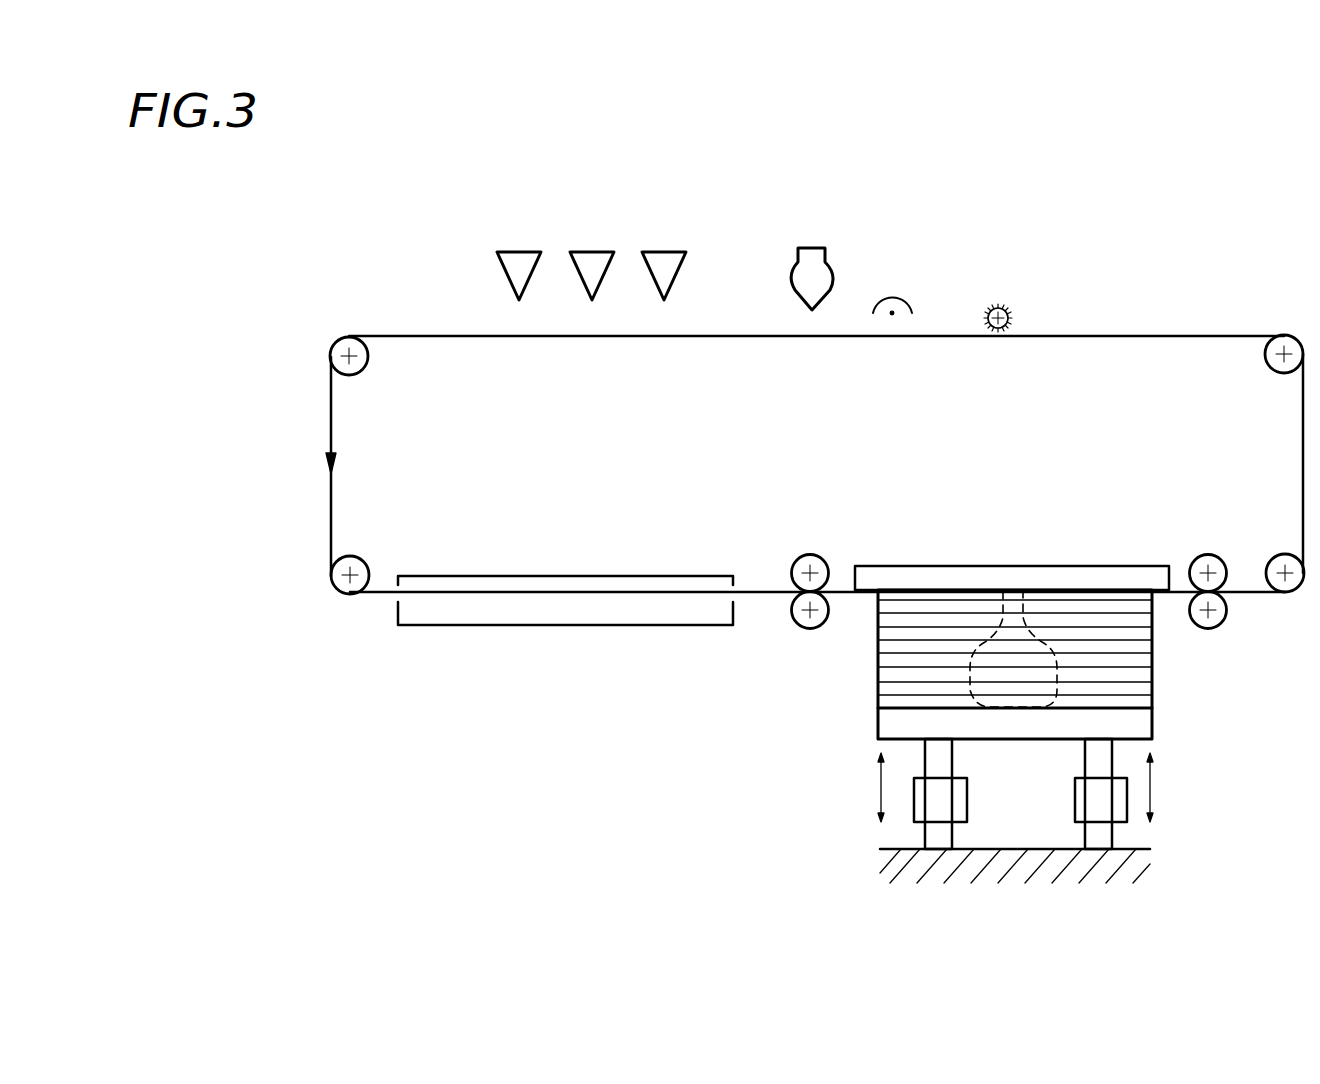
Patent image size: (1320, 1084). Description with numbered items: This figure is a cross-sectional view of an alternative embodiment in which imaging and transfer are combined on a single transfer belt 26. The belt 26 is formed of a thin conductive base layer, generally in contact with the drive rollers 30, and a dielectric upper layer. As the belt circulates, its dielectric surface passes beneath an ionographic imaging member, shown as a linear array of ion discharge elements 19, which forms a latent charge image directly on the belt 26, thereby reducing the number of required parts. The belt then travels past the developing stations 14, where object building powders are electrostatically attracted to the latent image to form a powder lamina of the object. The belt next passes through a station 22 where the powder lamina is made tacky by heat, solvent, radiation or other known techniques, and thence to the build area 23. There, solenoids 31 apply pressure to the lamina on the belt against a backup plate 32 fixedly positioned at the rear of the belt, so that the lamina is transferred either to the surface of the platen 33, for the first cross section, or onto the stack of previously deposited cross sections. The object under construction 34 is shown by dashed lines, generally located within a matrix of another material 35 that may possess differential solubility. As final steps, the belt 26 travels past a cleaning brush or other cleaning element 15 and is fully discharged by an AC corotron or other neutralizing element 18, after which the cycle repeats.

The developing stations 14 is at (485, 228).
The linear array of ion discharge elements 19 is at (813, 248).
The AC corotron or other neutralizing element 18 is at (900, 297).
The cleaning brush or other cleaning element 15 is at (998, 303).
The transfer belt 26 is at (1157, 335).
The drive rollers 30 is at (368, 360).
The build area 23 is at (943, 507).
The station 22 is at (568, 576).
The backup plate 32 is at (1090, 566).
The platen 33 is at (879, 726).
The object under construction 34 is at (1027, 645).
The matrix of another material 35 is at (912, 650).
The solenoids 31 is at (1119, 813).